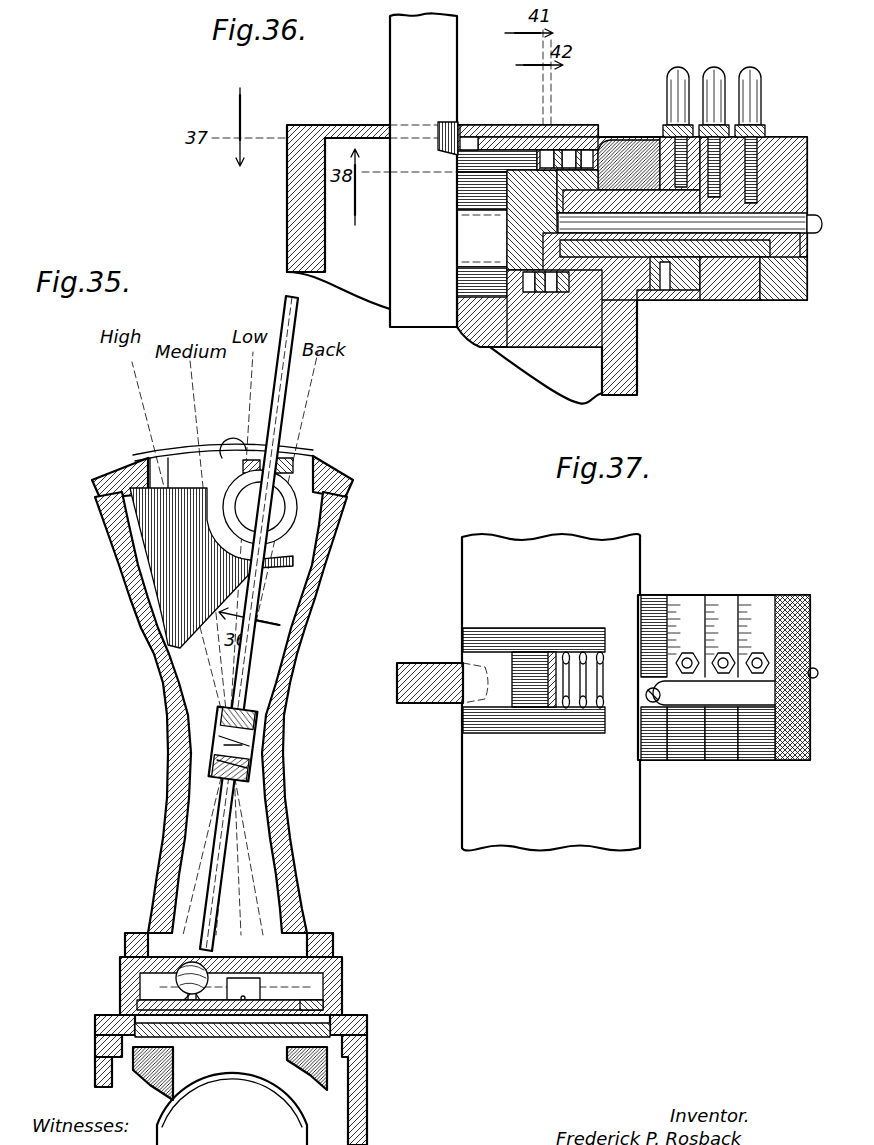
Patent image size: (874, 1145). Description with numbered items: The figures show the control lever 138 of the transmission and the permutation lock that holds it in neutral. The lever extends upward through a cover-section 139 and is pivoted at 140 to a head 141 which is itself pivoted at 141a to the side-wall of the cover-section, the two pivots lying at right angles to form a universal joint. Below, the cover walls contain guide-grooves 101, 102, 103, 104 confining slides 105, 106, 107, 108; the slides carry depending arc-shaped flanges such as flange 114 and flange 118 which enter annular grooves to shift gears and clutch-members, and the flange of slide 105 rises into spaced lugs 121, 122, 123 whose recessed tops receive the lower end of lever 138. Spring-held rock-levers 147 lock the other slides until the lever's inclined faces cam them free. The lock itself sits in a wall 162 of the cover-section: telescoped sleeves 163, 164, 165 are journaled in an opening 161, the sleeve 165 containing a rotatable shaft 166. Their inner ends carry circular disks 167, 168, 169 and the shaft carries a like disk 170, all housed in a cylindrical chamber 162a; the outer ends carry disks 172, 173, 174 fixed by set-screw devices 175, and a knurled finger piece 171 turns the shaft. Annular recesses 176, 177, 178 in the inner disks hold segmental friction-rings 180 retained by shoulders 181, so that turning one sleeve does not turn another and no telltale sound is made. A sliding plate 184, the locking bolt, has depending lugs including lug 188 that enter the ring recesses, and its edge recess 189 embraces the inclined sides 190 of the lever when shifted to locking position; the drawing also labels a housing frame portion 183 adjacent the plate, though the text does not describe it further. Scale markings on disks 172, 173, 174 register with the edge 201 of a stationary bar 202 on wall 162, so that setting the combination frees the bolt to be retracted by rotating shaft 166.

In FIG. 35, the guide-groove 101 is at (358, 1047).
In FIG. 35, the guide-groove 102 is at (330, 1030).
In FIG. 35, the guide-groove 103 is at (350, 1024).
In FIG. 35, the guide-groove 104 is at (323, 1004).
In FIG. 35, the slide 105 is at (100, 1064).
In FIG. 35, the slide 106 is at (96, 1045).
In FIG. 35, the slide 107 is at (96, 1022).
In FIG. 35, the slide 108 is at (137, 1003).
In FIG. 35, the depending flange 114 is at (320, 1085).
In FIG. 35, the depending flange 118 is at (290, 1118).
In FIG. 35, the lug 121 is at (290, 984).
In FIG. 35, the lug 122 is at (243, 996).
In FIG. 35, the lug 123 is at (190, 962).
In FIG. 36, the control lever 138 is at (400, 88).
In FIG. 37, the control lever 138 is at (397, 684).
In FIG. 35, the control lever 138 is at (288, 300).
In FIG. 35, the cover-section 139 is at (172, 792).
In FIG. 35, the pivot 140 is at (254, 750).
In FIG. 35, the head 141 is at (254, 718).
In FIG. 35, the pivot 141a is at (219, 744).
In FIG. 35, the rock-lever 147 is at (228, 978).
In FIG. 36, the opening 161 is at (625, 192).
In FIG. 36, the wall 162 is at (604, 138).
In FIG. 36, the cylindrical chamber 162a is at (452, 222).
In FIG. 35, the cylindrical chamber 162a is at (293, 560).
In FIG. 36, the sleeve 163 is at (643, 139).
In FIG. 36, the sleeve 164 is at (650, 250).
In FIG. 36, the sleeve 165 is at (720, 252).
In FIG. 36, the shaft 166 is at (773, 224).
In FIG. 36, the circular disk 167 is at (572, 152).
In FIG. 36, the circular disk 168 is at (545, 157).
In FIG. 36, the circular disk 169 is at (548, 170).
In FIG. 37, the circular disk 169 is at (549, 652).
In FIG. 36, the circular disk 170 is at (510, 208).
In FIG. 37, the circular disk 170 is at (536, 692).
In FIG. 35, the circular disk 170 is at (268, 510).
In FIG. 36, the knurled finger piece 171 is at (787, 143).
In FIG. 37, the knurled finger piece 171 is at (796, 610).
In FIG. 36, the disk 172 is at (685, 302).
In FIG. 37, the disk 172 is at (690, 760).
In FIG. 36, the disk 173 is at (747, 307).
In FIG. 37, the disk 173 is at (738, 760).
In FIG. 36, the disk 174 is at (753, 305).
In FIG. 37, the disk 174 is at (760, 760).
In FIG. 36, the set-screw device 175 is at (677, 68).
In FIG. 37, the set-screw device 175 is at (723, 658).
In FIG. 36, the annular recess 176 is at (593, 270).
In FIG. 36, the annular recess 177 is at (570, 270).
In FIG. 36, the annular recess 178 is at (547, 272).
In FIG. 37, the friction-ring 180 is at (600, 652).
In FIG. 37, the shoulder 181 is at (600, 708).
In FIG. 36, the housing frame 183 is at (471, 124).
In FIG. 35, the housing frame 183 is at (212, 455).
In FIG. 36, the sliding plate 184 is at (493, 137).
In FIG. 35, the sliding plate 184 is at (293, 470).
In FIG. 35, the depending lug 188 is at (240, 462).
In FIG. 36, the recess 189 is at (447, 123).
In FIG. 36, the inclined sides 190 is at (452, 140).
In FIG. 37, the inclined sides 190 is at (462, 663).
In FIG. 35, the inclined sides 190 is at (262, 462).
In FIG. 37, the edge 201 is at (733, 682).
In FIG. 37, the bar 202 is at (723, 702).